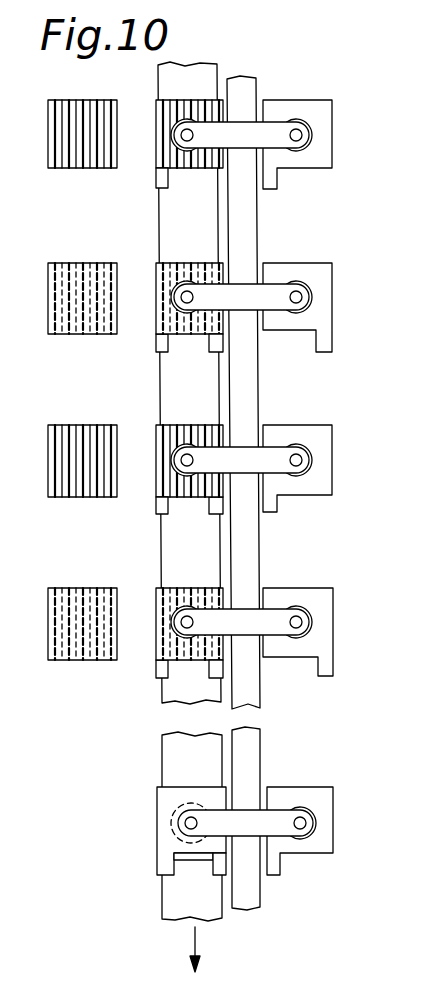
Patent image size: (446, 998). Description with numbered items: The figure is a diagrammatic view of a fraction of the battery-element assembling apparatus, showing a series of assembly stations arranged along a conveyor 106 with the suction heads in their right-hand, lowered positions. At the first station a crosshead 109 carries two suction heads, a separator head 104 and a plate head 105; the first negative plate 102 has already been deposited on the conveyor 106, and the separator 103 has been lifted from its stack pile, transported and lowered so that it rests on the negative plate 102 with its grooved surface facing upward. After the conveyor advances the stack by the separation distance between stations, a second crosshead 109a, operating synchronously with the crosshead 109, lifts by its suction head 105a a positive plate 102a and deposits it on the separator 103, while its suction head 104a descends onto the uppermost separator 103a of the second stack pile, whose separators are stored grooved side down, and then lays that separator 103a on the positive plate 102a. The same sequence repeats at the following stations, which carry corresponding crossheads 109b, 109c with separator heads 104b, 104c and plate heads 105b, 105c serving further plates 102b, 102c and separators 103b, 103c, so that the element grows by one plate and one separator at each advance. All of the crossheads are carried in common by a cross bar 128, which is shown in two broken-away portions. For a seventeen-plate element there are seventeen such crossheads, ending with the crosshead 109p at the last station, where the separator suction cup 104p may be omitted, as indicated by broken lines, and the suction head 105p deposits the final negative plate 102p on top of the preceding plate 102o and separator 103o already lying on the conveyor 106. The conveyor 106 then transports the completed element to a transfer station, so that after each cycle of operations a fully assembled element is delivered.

The negative plate 102 is at (298, 103).
The positive plate 102a is at (213, 348).
The support block 102b is at (163, 511).
The support block 102c is at (216, 665).
The final negative plate 102p is at (165, 847).
The support tab 102o is at (215, 872).
The separator 103 is at (157, 105).
The separator 103a is at (63, 330).
The friction pad 103b is at (158, 432).
The friction pad 103c is at (158, 598).
The pad 103o is at (200, 860).
The suction head 104 is at (175, 143).
The suction head 104a is at (178, 292).
The pivot pin 104b is at (176, 467).
The pivot pin 104c is at (187, 622).
The suction cup 104p is at (175, 820).
The suction head 105 is at (297, 148).
The suction head 105a is at (300, 285).
The pivot pin 105b is at (298, 447).
The pivot pin 105c is at (296, 622).
The suction head 105p is at (298, 808).
The conveyor 106 is at (197, 68).
The crosshead 109 is at (241, 135).
The crosshead 109a is at (241, 297).
The link 109b is at (241, 460).
The link 109c is at (241, 622).
The crosshead 109p is at (245, 823).
The bar 128 is at (247, 80).